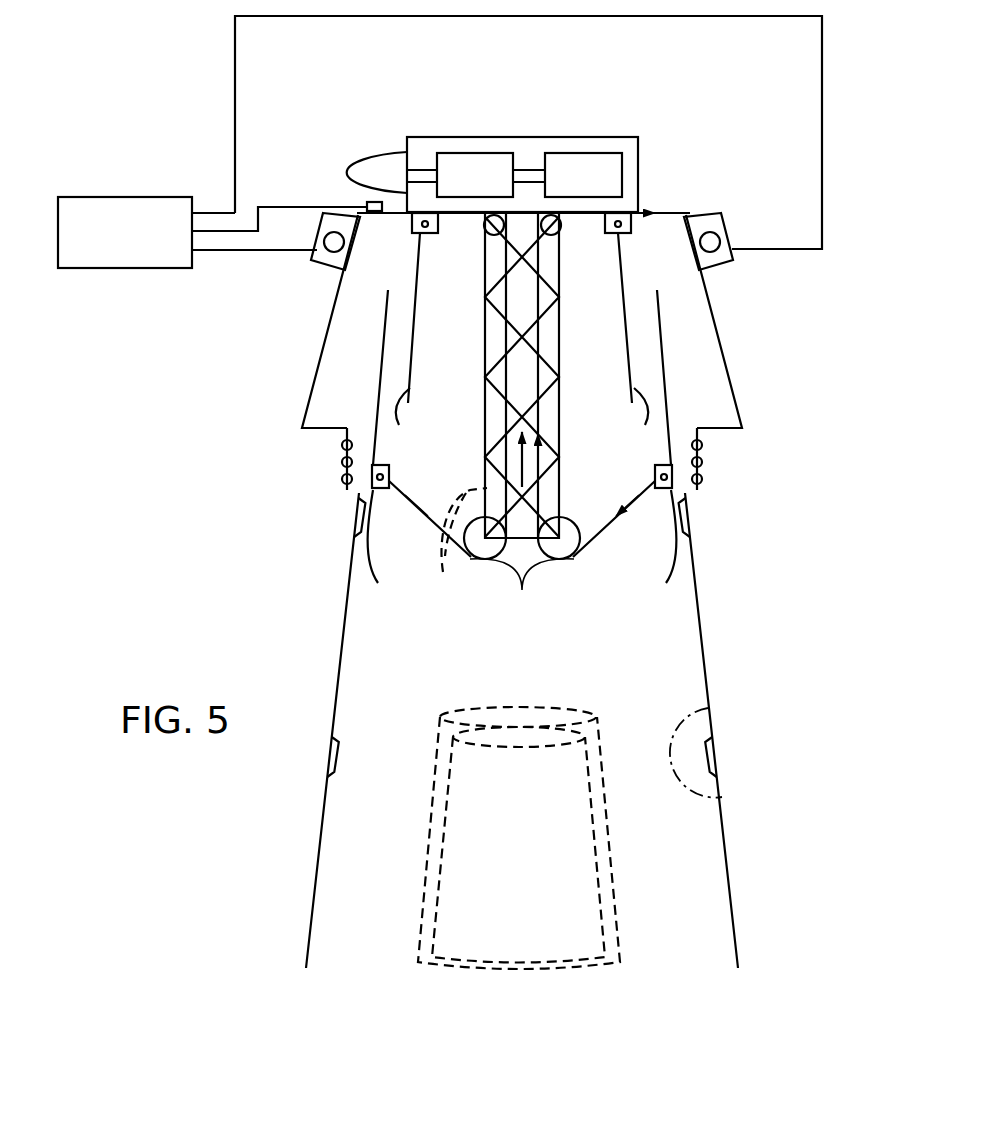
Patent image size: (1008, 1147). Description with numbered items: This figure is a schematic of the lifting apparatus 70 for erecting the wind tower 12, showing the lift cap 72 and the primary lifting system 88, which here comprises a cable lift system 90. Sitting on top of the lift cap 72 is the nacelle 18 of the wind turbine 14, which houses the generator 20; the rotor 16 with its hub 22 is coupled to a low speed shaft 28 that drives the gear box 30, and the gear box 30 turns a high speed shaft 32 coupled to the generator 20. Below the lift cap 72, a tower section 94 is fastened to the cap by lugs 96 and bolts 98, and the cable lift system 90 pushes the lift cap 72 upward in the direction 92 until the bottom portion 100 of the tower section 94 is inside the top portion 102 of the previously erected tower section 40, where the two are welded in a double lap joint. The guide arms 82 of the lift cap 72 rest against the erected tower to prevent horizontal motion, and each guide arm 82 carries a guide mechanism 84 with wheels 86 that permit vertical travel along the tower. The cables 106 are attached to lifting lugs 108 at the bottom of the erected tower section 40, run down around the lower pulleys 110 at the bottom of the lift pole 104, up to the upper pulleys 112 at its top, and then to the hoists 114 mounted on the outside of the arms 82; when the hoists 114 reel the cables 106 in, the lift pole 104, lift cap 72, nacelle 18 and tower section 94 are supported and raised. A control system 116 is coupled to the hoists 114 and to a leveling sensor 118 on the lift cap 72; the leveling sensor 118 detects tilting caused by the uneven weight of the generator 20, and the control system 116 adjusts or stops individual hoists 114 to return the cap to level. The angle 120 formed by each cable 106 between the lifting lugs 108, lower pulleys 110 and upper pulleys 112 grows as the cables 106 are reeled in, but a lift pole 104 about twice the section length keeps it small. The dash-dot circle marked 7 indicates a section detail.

The section line 7 is at (712, 708).
The wind tower 12 is at (834, 385).
The wind turbine 14 is at (665, 157).
The rotor 16 is at (359, 149).
The nacelle 18 is at (562, 136).
The generator 20 is at (585, 153).
The hub 22 is at (363, 168).
The low speed shaft 28 is at (423, 168).
The gear box 30 is at (475, 153).
The high speed shaft 32 is at (530, 168).
The tower section 40 is at (378, 383).
The lifting apparatus 70 is at (201, 160).
The lift cap 72 is at (677, 207).
The guide arms 82 is at (303, 418).
The guide mechanism 84 is at (331, 453).
The wheels 86 is at (346, 482).
The primary lifting system 88 is at (600, 556).
The cable lift system 90 is at (575, 391).
The direction 92 is at (524, 468).
The tower section 94 is at (422, 364).
The lugs 96 is at (412, 224).
The bolts 98 is at (417, 234).
The bottom portion 100 is at (522, 457).
The top portion 102 is at (387, 297).
The lift pole 104 is at (483, 418).
The cables 106 is at (503, 361).
The lifting lugs 108 is at (525, 551).
The lower pulleys 110 is at (522, 570).
The upper pulleys 112 is at (489, 239).
The hoists 114 is at (325, 266).
The control system 116 is at (128, 197).
The leveling sensor 118 is at (368, 208).
The angle 120 is at (456, 544).